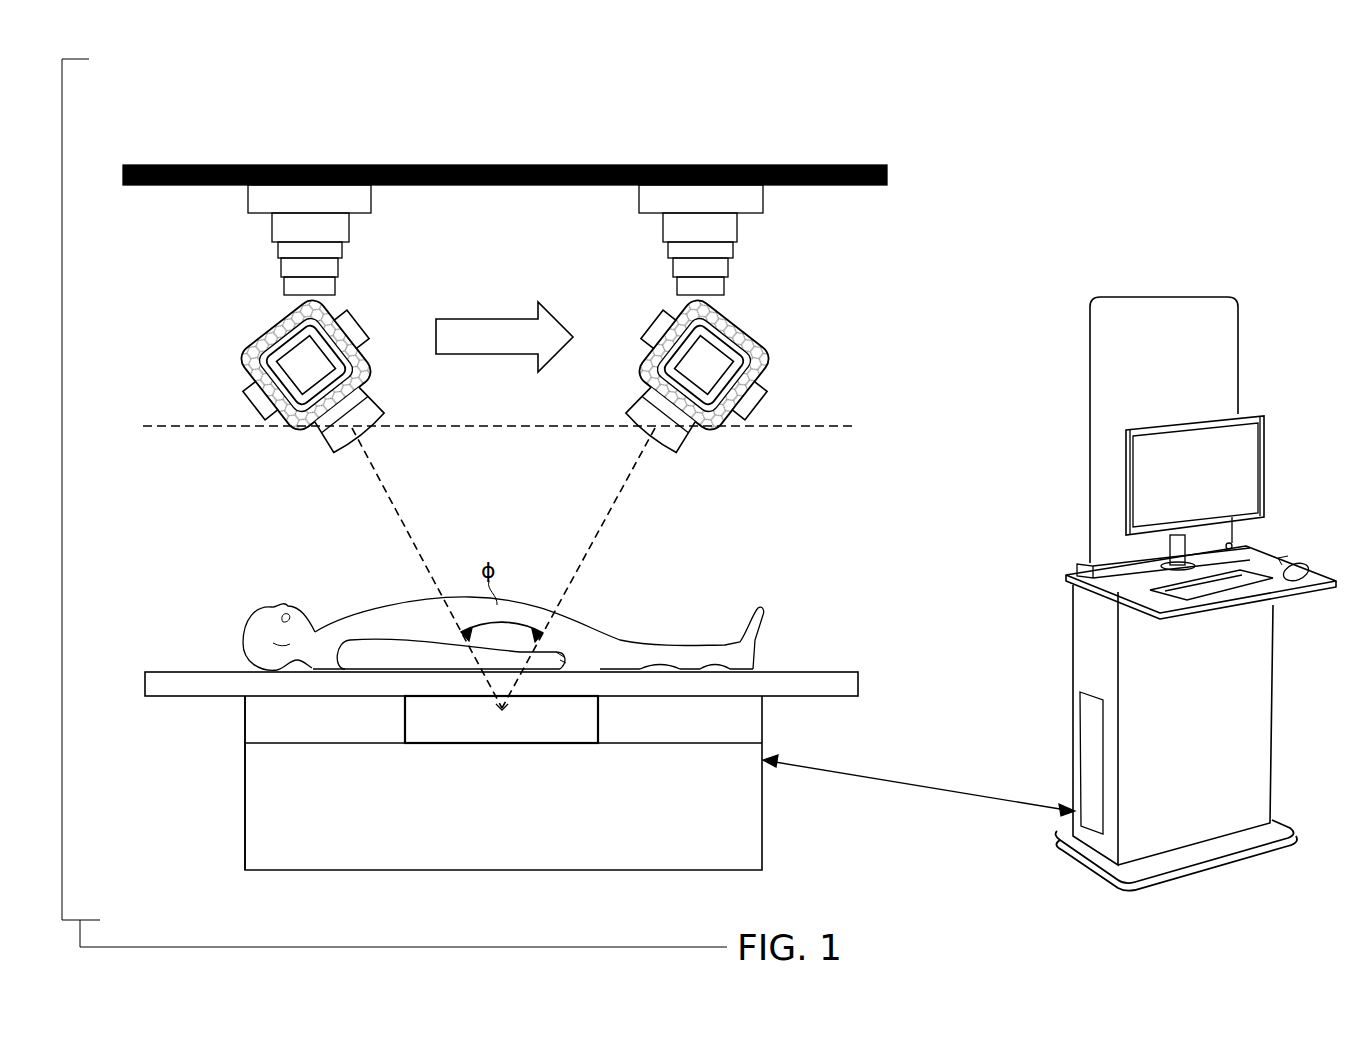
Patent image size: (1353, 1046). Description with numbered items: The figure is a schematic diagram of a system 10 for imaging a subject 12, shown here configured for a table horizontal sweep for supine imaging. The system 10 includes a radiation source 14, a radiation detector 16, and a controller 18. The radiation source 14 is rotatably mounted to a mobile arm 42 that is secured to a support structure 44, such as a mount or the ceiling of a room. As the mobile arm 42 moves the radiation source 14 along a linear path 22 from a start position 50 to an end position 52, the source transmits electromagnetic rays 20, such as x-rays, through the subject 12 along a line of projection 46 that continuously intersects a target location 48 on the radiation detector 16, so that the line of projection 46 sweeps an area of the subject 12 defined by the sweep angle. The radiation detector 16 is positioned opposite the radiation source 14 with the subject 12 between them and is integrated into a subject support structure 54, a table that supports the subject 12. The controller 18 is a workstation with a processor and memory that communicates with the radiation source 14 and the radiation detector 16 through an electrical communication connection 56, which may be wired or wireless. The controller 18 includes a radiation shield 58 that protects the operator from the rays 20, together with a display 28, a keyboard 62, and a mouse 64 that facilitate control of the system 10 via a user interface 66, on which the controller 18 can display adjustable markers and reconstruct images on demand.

The system 10 is at (203, 95).
The subject 12 is at (266, 611).
The radiation source 14 is at (355, 314).
The radiation detector 16 is at (598, 718).
The controller 18 is at (1202, 273).
The electromagnetic rays 20 is at (498, 440).
The path 22 is at (188, 426).
The display 28 is at (1229, 493).
The mobile arm 42 is at (280, 262).
The support structure 44 is at (498, 164).
The line of projection 46 is at (392, 514).
The target location 48 is at (505, 708).
The start position 50 is at (291, 160).
The end position 52 is at (680, 160).
The subject support structure 54 is at (217, 697).
The electrical communication connection 56 is at (955, 797).
The radiation shield 58 is at (1222, 381).
The keyboard 62 is at (1245, 588).
The mouse 64 is at (1300, 566).
The user interface 66 is at (1250, 482).